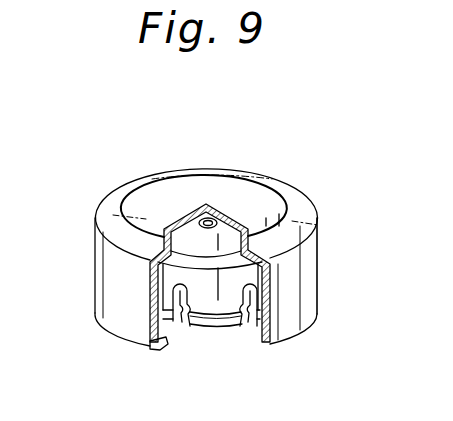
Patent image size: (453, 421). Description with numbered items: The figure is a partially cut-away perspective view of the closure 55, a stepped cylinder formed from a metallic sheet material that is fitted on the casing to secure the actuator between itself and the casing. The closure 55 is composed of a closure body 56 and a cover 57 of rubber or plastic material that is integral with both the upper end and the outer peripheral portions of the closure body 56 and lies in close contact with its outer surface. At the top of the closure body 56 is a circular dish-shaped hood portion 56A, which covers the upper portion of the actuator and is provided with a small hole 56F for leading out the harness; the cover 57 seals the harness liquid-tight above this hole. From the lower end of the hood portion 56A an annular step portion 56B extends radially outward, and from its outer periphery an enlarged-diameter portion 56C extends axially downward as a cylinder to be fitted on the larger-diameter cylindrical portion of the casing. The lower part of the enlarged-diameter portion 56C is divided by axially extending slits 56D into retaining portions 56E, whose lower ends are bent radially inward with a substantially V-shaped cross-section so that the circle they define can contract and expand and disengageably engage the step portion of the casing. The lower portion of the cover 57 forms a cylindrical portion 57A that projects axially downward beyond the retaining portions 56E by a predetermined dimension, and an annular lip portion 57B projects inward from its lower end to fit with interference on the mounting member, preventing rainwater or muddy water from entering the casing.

The closure 55 is at (101, 189).
The closure body 56 is at (231, 219).
The hood portion 56A is at (160, 240).
The annular step portion 56B is at (290, 223).
The enlarged-diameter portion 56C is at (163, 277).
The axially extending slits 56D is at (188, 324).
The retaining portions 56E is at (218, 327).
The small hole 56F is at (206, 213).
The cover 57 is at (129, 225).
The cylindrical portion 57A is at (303, 281).
The annular lip portion 57B is at (166, 352).